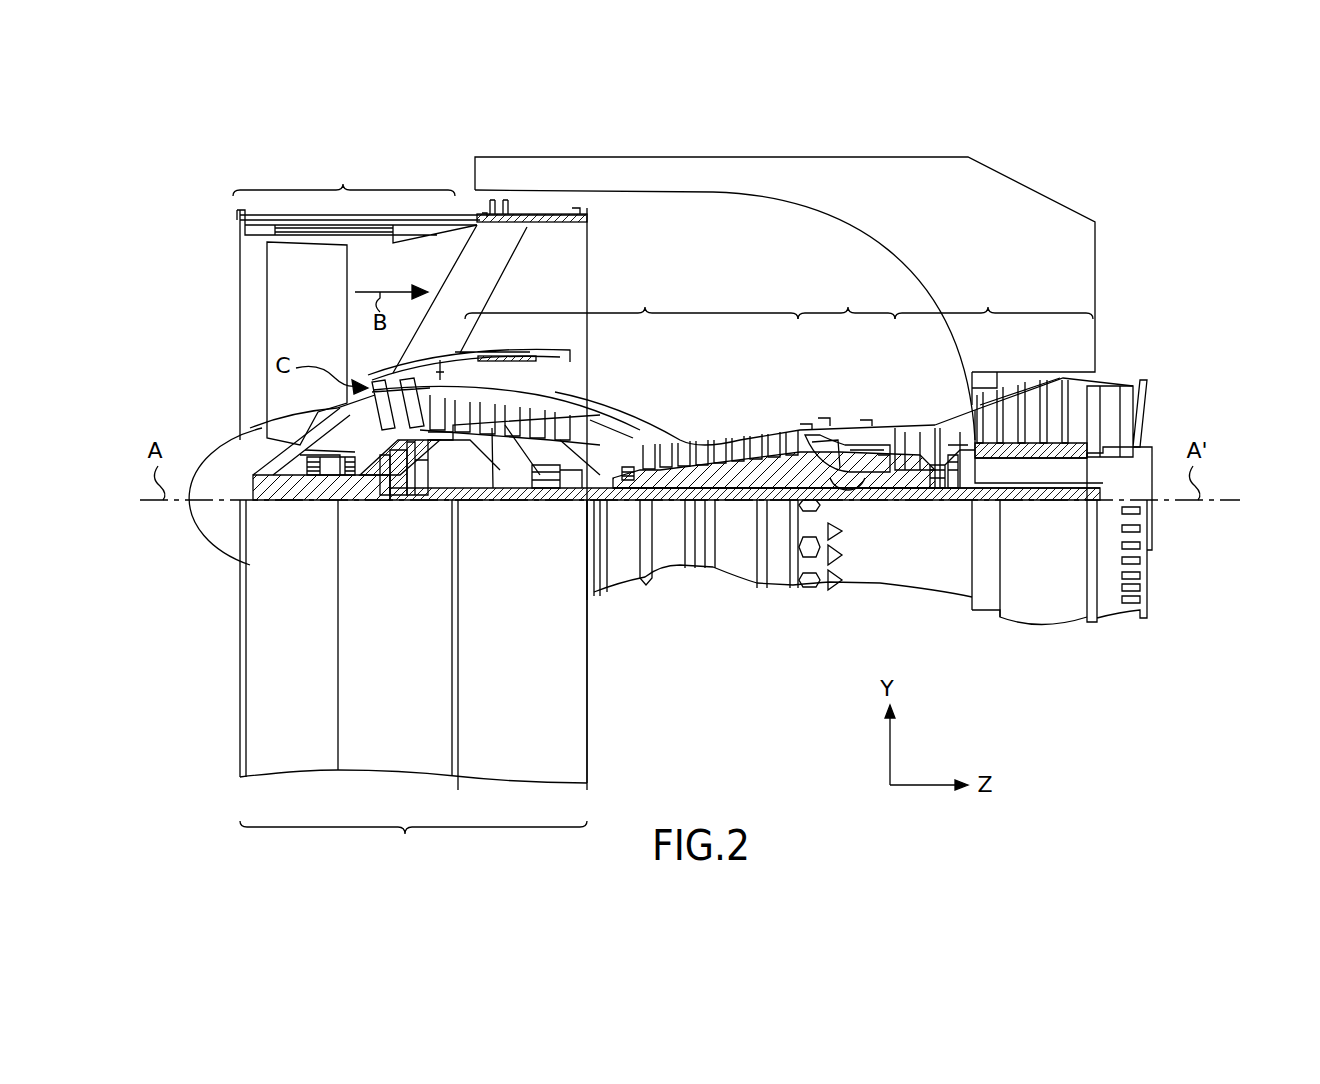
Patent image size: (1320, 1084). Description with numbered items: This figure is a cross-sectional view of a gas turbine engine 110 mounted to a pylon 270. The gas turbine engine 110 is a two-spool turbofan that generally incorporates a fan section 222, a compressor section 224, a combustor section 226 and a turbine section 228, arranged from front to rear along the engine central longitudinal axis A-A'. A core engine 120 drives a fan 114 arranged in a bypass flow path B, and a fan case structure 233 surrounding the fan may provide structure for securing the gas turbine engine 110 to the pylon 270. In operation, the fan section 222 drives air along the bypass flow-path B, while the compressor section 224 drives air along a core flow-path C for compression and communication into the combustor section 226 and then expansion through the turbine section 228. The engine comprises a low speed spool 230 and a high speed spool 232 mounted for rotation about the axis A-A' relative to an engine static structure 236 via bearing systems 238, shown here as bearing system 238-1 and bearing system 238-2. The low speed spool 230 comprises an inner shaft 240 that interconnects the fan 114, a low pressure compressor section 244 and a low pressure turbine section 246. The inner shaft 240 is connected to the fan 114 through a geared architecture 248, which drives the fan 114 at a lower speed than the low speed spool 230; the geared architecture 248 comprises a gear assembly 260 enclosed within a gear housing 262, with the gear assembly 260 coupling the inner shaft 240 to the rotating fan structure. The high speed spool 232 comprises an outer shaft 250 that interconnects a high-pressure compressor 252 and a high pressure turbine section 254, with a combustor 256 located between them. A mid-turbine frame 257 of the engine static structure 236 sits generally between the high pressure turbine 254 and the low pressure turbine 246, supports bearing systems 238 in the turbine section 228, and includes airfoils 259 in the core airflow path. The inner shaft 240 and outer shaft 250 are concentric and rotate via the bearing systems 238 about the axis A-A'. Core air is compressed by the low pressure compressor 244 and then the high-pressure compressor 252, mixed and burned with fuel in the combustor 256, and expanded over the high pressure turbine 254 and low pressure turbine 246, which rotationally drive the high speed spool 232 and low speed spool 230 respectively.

The gas turbine engine 110 is at (1148, 238).
The fan 114 is at (292, 335).
The core engine 120 is at (748, 348).
The fan section 222 is at (344, 176).
The compressor section 224 is at (631, 298).
The combustor section 226 is at (846, 298).
The turbine section 228 is at (994, 298).
The low speed spool 230 is at (743, 505).
The high speed spool 232 is at (776, 470).
The fan case structure 233 is at (413, 683).
The engine static structure 236 is at (775, 573).
The bearing system 238 is at (945, 490).
The bearing system 238-1 is at (318, 478).
The bearing system 238-2 is at (544, 494).
The inner shaft 240 is at (606, 502).
The low pressure compressor section 244 is at (553, 401).
The low pressure turbine section 246 is at (1030, 396).
The geared architecture 248 is at (425, 508).
The outer shaft 250 is at (848, 484).
The high-pressure compressor 252 is at (722, 456).
The high pressure turbine section 254 is at (912, 428).
The combustor 256 is at (847, 440).
The mid-turbine frame 257 is at (938, 442).
The airfoils 259 is at (950, 436).
The gear assembly 260 is at (420, 490).
The gear housing 262 is at (420, 453).
The pylon 270 is at (1035, 206).